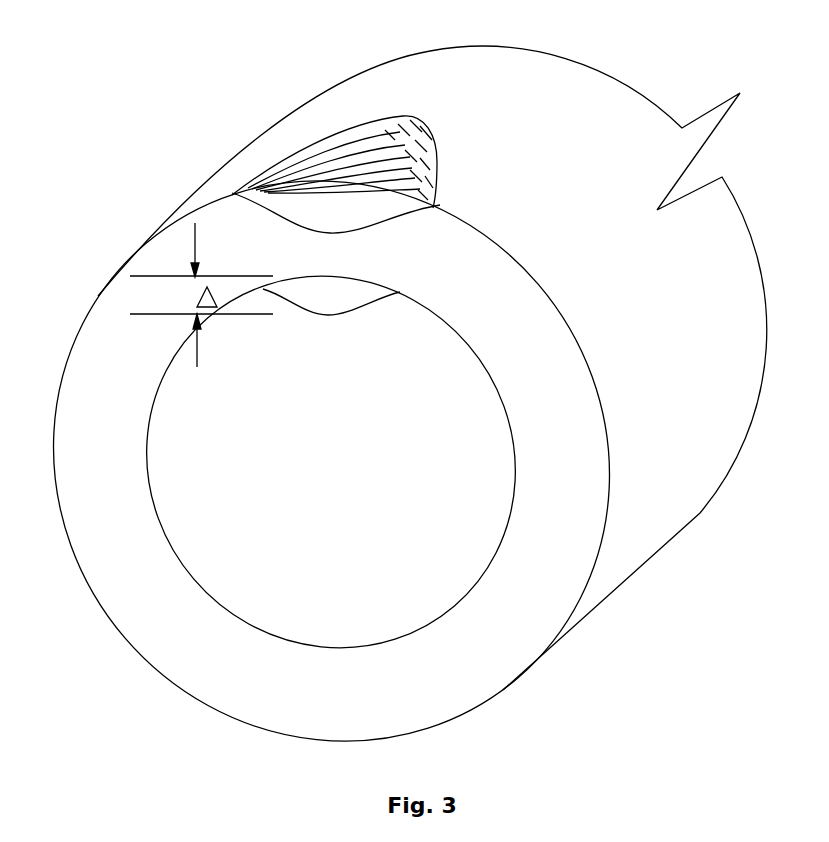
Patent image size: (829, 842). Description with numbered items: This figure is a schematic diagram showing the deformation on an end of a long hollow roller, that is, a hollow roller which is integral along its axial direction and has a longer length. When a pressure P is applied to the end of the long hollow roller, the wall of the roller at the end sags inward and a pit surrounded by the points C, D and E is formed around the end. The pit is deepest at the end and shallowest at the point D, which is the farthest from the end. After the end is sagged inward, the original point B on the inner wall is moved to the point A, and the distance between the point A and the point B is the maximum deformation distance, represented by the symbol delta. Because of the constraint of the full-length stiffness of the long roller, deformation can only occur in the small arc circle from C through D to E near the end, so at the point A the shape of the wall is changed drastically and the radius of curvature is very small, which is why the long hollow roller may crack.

The point A is at (331, 318).
The point B is at (362, 454).
The point C is at (214, 240).
The point D is at (334, 150).
The point E is at (336, 219).
The pressure P is at (330, 184).